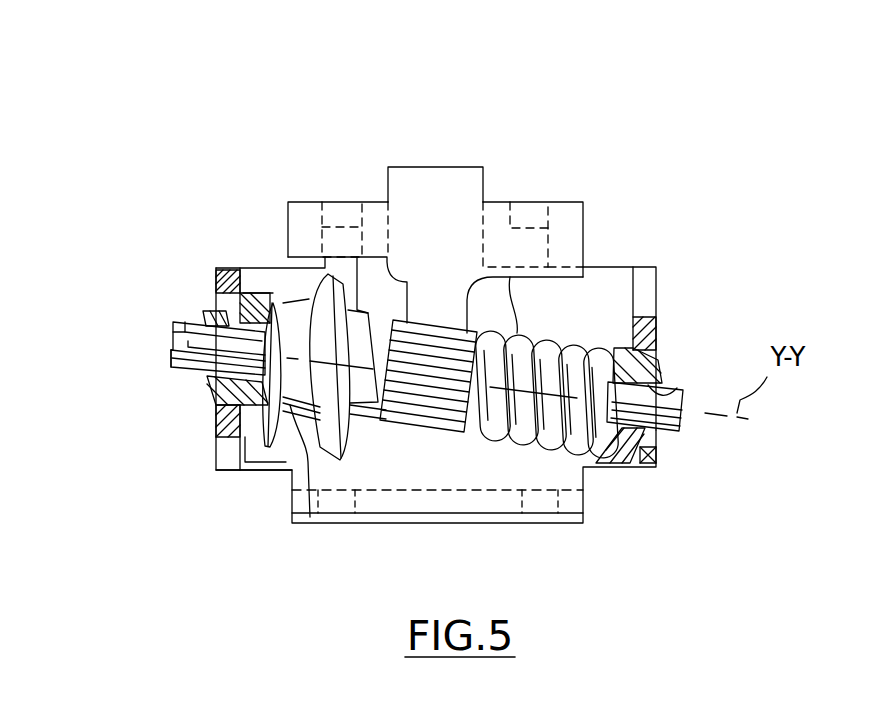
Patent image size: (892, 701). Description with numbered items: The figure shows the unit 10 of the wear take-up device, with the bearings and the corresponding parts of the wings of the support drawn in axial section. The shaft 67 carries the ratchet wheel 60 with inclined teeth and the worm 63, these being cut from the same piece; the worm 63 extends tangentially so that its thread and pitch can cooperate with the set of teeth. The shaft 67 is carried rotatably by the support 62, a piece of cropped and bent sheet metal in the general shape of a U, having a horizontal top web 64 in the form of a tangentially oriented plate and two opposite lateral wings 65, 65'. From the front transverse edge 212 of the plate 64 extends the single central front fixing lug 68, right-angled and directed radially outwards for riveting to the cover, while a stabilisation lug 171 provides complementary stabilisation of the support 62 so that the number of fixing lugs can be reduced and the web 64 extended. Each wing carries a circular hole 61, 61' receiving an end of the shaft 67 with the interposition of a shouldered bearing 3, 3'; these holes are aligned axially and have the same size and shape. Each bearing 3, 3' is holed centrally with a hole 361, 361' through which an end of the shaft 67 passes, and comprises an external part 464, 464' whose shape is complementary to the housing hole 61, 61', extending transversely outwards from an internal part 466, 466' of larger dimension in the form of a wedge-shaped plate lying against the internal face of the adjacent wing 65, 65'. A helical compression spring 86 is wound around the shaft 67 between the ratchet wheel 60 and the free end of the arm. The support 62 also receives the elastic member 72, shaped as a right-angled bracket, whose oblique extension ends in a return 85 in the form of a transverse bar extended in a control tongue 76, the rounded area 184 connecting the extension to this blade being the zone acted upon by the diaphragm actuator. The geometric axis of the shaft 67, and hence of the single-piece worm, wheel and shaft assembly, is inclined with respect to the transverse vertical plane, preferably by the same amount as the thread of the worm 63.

The unit 10 is at (660, 115).
The bearing 3 is at (225, 268).
The bearing 3' is at (626, 503).
The ratchet wheel 60 is at (424, 446).
The circular hole 61 is at (180, 289).
The circular hole 61' is at (693, 324).
The support 62 is at (668, 262).
The worm 63 is at (309, 289).
The top web 64 is at (598, 288).
The lateral wing 65 is at (195, 454).
The lateral wing 65' is at (681, 319).
The shaft 67 is at (166, 376).
The front fixing lug 68 is at (488, 478).
The elastic member 72 is at (506, 194).
The control tongue 76 is at (425, 203).
The return 85 is at (372, 223).
The helical compression spring 86 is at (572, 333).
The stabilisation lug 171 is at (463, 162).
The rounded area 184 is at (432, 323).
The front transverse edge 212 is at (258, 474).
The hole 361 is at (167, 338).
The hole 361' is at (677, 384).
The external part 464 is at (184, 417).
The external part 464' is at (708, 444).
The internal part 466 is at (304, 503).
The internal part 466' is at (671, 226).